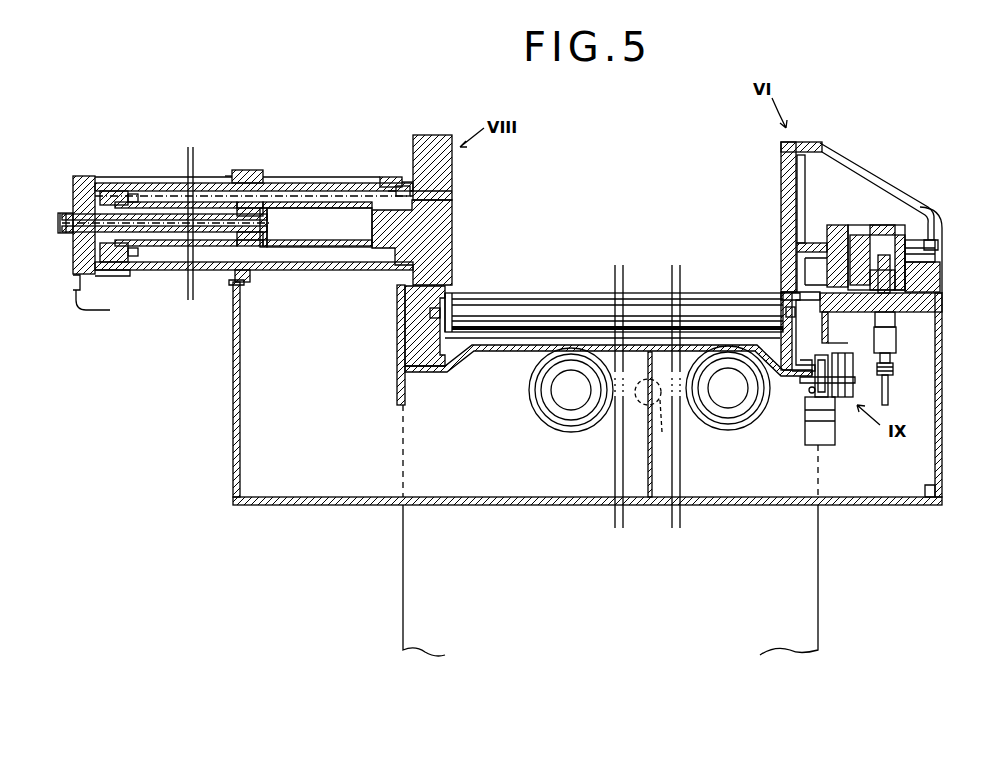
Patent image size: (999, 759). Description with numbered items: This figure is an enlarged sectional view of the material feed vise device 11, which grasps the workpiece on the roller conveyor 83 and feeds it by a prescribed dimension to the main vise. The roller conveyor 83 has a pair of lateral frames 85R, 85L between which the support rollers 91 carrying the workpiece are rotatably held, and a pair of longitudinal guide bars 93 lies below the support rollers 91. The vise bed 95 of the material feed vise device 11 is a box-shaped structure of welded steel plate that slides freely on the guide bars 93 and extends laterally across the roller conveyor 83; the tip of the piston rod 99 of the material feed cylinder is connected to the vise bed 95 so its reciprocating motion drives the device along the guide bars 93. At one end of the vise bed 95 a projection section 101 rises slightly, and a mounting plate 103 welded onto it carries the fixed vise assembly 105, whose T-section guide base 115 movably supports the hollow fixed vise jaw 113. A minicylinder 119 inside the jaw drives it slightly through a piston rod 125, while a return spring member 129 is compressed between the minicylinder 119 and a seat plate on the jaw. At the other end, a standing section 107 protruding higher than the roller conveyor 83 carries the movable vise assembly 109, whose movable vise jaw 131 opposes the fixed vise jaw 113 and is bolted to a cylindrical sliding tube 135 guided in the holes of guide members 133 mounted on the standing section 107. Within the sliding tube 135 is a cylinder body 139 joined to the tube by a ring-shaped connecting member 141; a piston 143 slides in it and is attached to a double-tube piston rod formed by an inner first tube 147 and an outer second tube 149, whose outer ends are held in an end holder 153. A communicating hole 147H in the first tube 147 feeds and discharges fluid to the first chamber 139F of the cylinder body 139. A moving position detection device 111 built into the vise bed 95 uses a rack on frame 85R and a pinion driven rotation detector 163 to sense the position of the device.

The material feed vise device 11 is at (589, 423).
The roller conveyor 83 is at (820, 590).
The lateral frame 85L is at (400, 377).
The lateral frame 85R is at (772, 300).
The support rollers 91 is at (646, 296).
The guide bars 93 is at (720, 395).
The vise bed 95 is at (521, 505).
The piston rod 99 is at (653, 407).
The projection section 101 is at (944, 345).
The mounting plate 103 is at (944, 304).
The fixed vise assembly 105 is at (870, 168).
The standing section 107 is at (246, 315).
The movable vise assembly 109 is at (452, 201).
The moving position detection device 111 is at (847, 414).
The fixed vise jaw 113 is at (781, 226).
The guide base 115 is at (897, 315).
The minicylinder 119 is at (890, 240).
The piston rod 125 is at (818, 240).
The return spring member 129 is at (940, 231).
The movable vise jaw 131 is at (447, 255).
The guide members 133 is at (390, 177).
The sliding tube 135 is at (346, 268).
The cylinder body 139 is at (338, 203).
The first chamber 139F is at (309, 246).
The connecting member 141 is at (108, 266).
The piston 143 is at (242, 207).
The first tube 147 is at (184, 224).
The communicating hole 147H is at (270, 231).
The second tube 149 is at (163, 203).
The end holder 153 is at (85, 176).
The rotation detector 163 is at (806, 440).